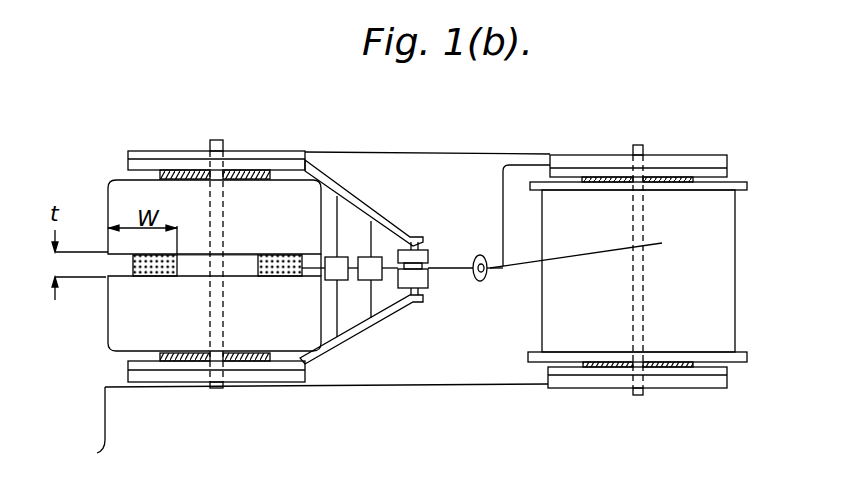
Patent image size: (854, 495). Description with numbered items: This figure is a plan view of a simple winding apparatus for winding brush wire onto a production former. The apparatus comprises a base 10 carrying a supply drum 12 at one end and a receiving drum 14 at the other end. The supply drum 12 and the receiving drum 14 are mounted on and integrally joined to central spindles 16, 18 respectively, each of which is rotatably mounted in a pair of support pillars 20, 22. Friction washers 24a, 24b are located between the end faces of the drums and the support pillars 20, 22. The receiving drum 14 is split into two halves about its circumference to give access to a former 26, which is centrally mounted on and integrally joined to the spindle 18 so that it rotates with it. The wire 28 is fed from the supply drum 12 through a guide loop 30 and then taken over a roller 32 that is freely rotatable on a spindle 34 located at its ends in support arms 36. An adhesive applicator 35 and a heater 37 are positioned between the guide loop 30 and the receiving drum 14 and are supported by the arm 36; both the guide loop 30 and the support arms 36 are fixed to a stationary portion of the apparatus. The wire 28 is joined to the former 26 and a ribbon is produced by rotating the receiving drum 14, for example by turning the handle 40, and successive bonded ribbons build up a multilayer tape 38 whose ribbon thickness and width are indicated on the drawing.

The base 10 is at (447, 369).
The supply drum 12 is at (747, 182).
The receiving drum 14 is at (108, 184).
The central spindle 16 is at (642, 145).
The central spindle 18 is at (218, 141).
The support pillar 20 is at (727, 370).
The support pillar 22 is at (148, 162).
The friction washer 24a is at (682, 178).
The friction washer 24b is at (256, 176).
The former 26 is at (196, 268).
The wire 28 is at (610, 258).
The guide loop 30 is at (480, 283).
The roller 32 is at (428, 252).
The spindle 34 is at (413, 303).
The adhesive applicator 35 is at (378, 258).
The support arm 36 is at (388, 220).
The heater 37 is at (338, 257).
The tape 38 is at (128, 262).
The handle 40 is at (84, 428).